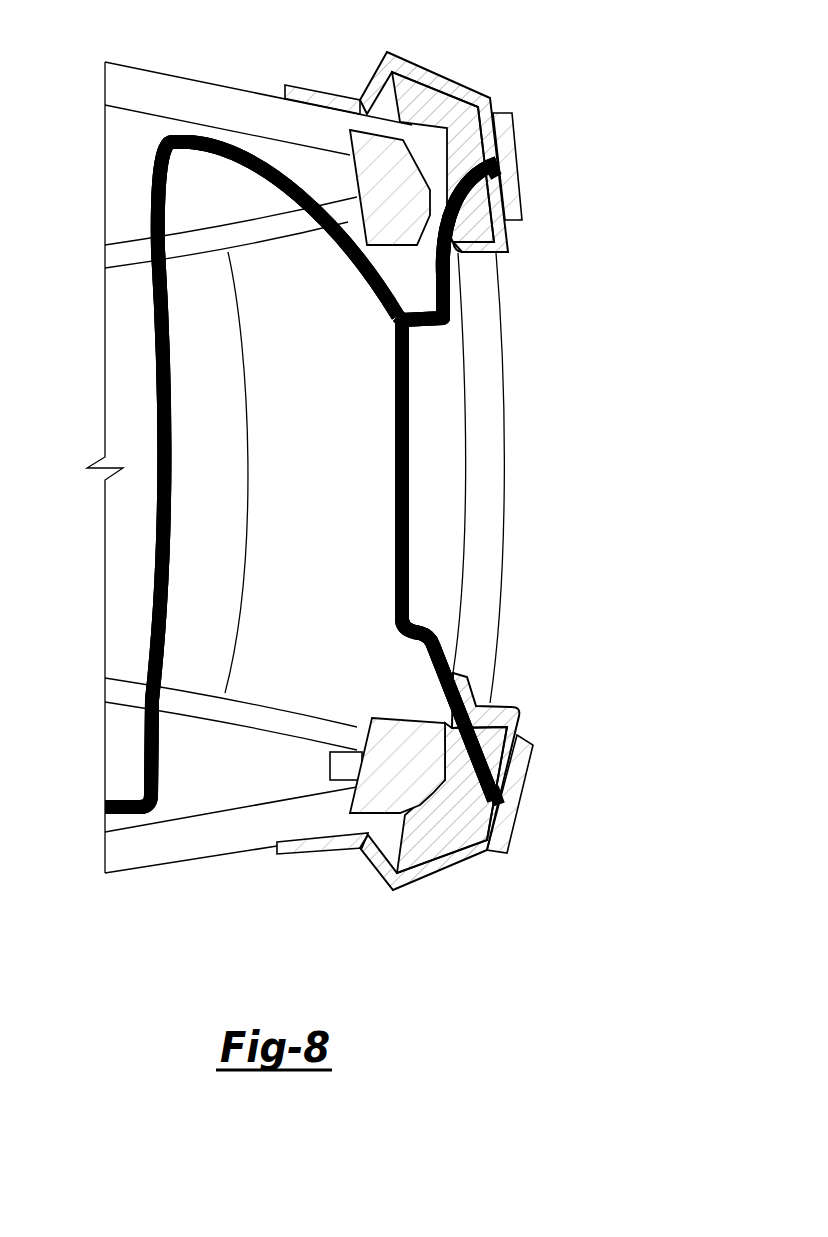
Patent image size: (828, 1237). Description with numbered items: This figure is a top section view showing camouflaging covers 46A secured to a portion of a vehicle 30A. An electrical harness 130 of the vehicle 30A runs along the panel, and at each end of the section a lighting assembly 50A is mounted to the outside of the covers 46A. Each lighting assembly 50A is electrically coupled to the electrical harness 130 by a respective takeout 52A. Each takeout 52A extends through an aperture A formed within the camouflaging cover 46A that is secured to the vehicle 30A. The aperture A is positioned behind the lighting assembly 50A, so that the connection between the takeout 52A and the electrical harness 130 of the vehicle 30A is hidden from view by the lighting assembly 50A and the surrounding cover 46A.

The vehicle 30A is at (170, 74).
The camouflaging cover 46A is at (370, 80).
The lighting assembly 50A is at (534, 126).
The takeout 52A is at (495, 164).
The electrical harness 130 is at (410, 453).
The aperture A is at (499, 170).